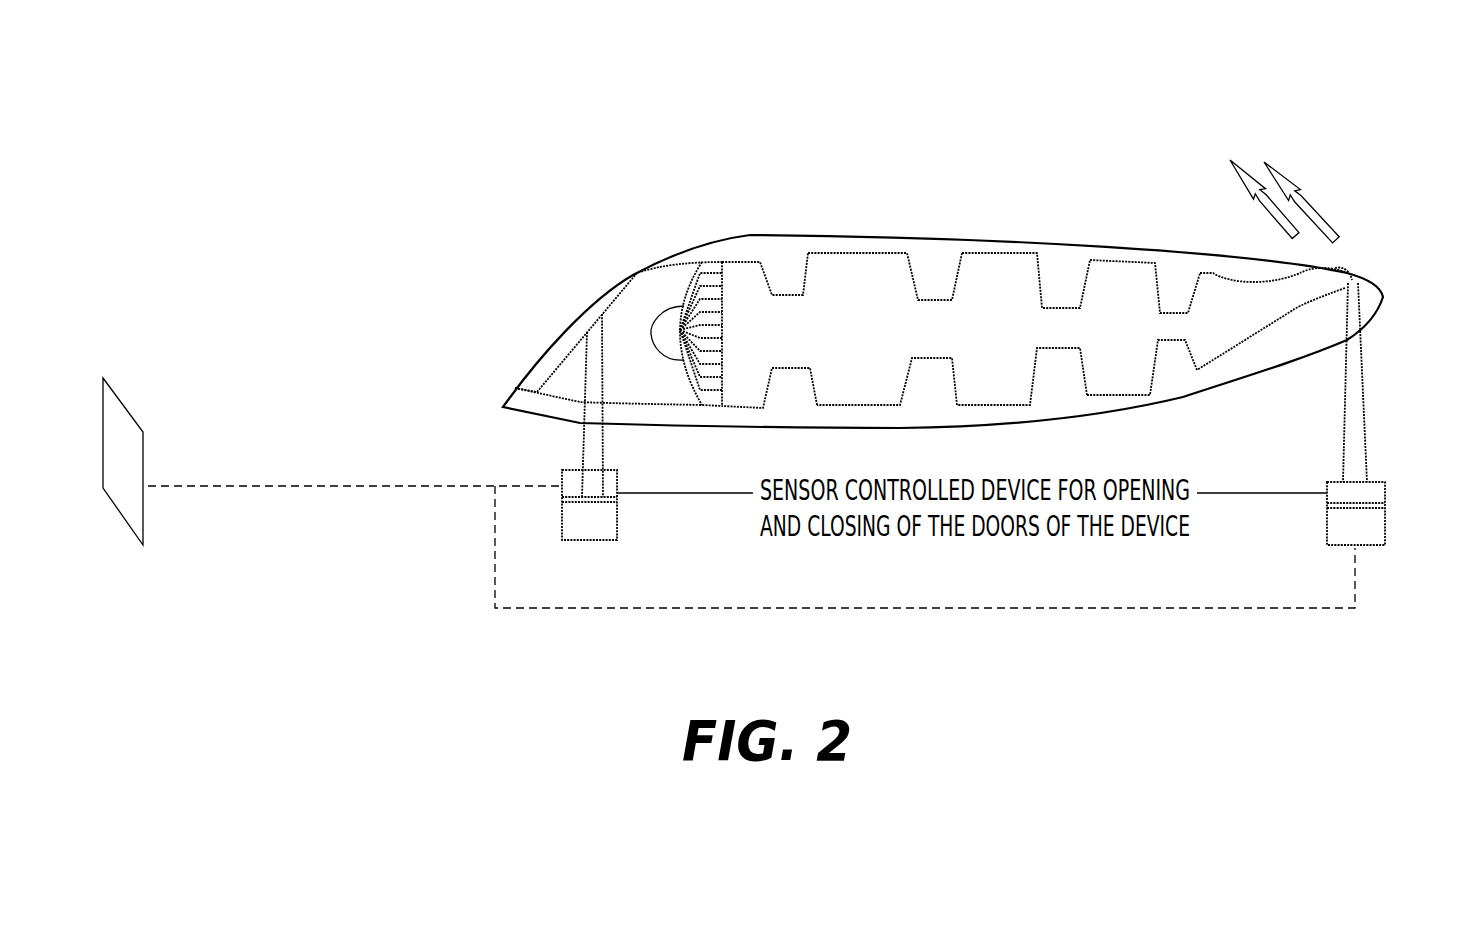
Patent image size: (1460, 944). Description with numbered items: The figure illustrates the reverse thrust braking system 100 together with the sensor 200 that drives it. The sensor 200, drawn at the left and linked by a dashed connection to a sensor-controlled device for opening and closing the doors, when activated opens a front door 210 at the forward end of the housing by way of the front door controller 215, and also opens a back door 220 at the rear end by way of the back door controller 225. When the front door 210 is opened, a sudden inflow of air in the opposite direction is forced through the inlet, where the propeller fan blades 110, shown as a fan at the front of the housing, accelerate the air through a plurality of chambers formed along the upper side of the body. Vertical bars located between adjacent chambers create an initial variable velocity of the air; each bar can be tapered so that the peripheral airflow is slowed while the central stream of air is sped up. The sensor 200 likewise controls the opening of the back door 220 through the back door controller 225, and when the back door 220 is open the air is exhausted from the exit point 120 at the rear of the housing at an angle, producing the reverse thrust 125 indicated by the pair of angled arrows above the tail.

The reverse thrust braking system 100 is at (248, 148).
The sensor 200 is at (103, 378).
The front door 210 is at (572, 322).
The front door controller 215 is at (617, 525).
The propeller fan blades 110 is at (708, 262).
The reverse thrust 125 is at (1338, 266).
The back door 220 is at (1346, 274).
The exit point 120 is at (1358, 280).
The back door controller 225 is at (1327, 515).